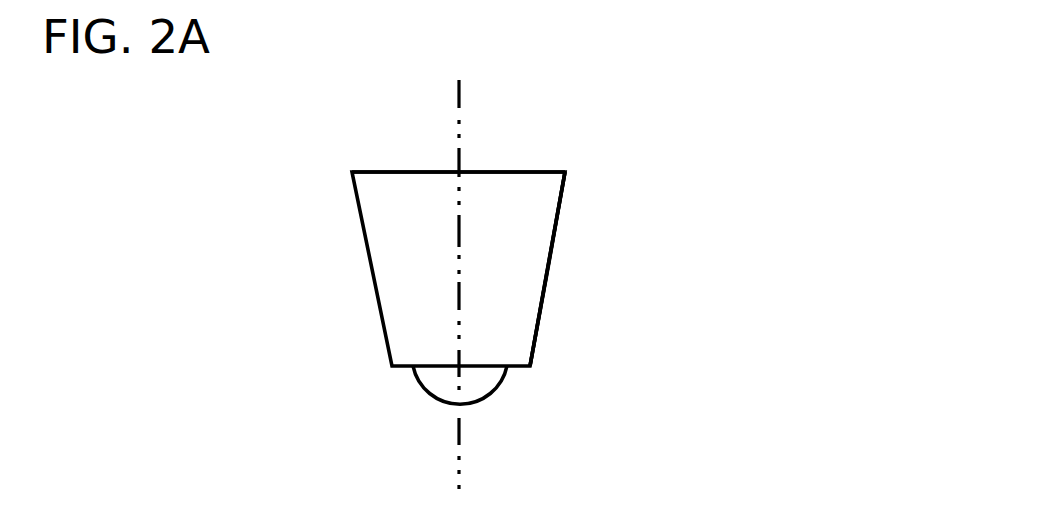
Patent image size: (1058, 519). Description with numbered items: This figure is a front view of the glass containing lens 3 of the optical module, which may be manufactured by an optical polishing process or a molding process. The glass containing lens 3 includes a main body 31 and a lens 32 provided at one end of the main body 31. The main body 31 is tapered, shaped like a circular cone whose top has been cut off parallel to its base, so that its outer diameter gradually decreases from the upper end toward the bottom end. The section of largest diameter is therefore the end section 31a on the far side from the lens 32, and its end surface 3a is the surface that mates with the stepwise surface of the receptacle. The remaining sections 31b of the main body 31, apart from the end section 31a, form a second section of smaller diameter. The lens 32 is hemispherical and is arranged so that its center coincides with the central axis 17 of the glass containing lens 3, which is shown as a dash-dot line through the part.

The central axis 17 is at (459, 99).
The glass containing lens 3 is at (368, 262).
The end surface 3a is at (513, 170).
The main body 31 is at (830, 220).
The end section 31a is at (560, 185).
The sections 31b is at (542, 295).
The lens 32 is at (482, 385).